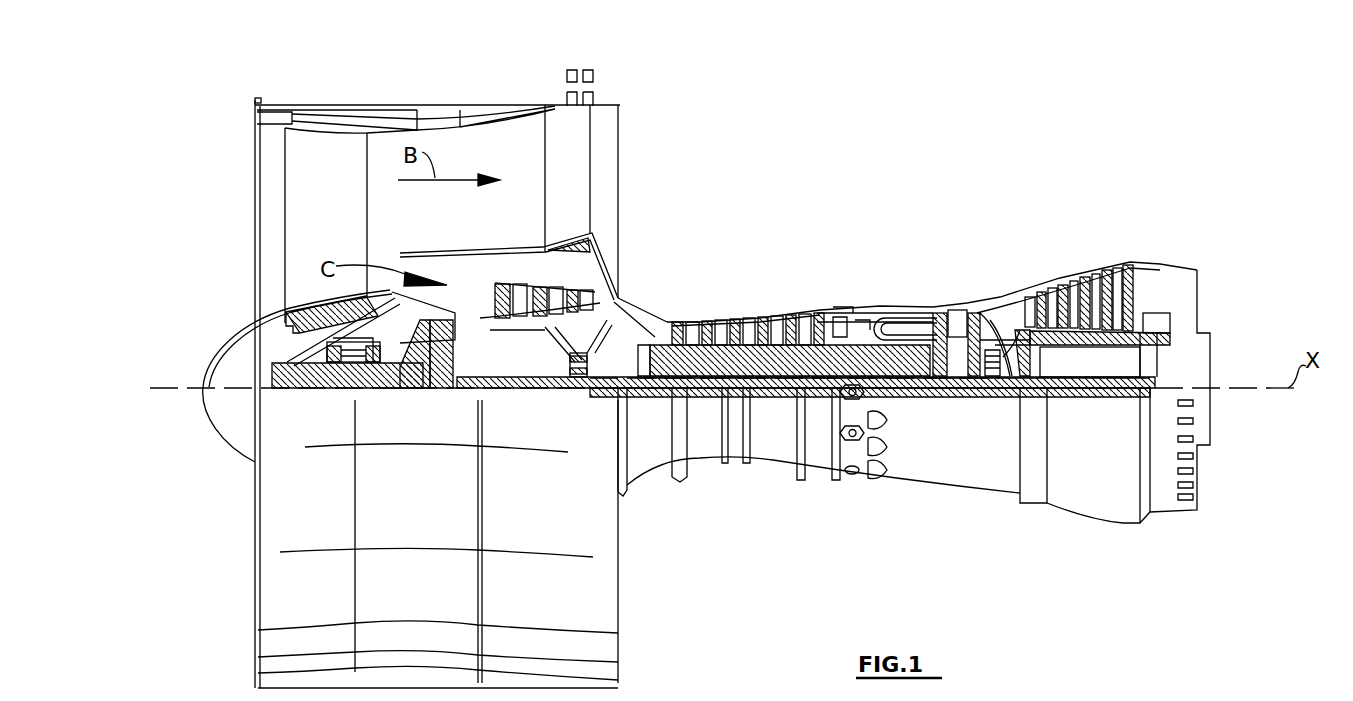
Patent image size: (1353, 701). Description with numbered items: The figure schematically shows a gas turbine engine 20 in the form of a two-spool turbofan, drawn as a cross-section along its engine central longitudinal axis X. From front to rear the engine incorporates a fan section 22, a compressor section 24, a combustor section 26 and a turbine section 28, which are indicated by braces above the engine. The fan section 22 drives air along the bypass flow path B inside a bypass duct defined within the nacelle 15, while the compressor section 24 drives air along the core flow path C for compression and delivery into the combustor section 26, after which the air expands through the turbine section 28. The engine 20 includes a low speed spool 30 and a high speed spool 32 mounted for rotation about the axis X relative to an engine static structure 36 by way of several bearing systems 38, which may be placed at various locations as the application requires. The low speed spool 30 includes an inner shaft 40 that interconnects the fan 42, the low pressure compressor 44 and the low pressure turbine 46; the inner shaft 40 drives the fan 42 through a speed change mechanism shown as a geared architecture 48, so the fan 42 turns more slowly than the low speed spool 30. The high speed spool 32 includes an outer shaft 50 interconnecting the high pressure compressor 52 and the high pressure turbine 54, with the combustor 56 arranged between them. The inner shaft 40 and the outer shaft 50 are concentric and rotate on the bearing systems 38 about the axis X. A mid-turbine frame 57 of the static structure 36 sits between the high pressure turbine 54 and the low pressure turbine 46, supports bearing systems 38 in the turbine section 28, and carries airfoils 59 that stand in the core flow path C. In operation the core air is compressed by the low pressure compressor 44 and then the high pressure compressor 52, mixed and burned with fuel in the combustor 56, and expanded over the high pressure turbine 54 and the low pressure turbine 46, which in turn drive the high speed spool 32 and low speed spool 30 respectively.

The nacelle 15 is at (458, 107).
The gas turbine engine 20 is at (900, 145).
The fan section 22 is at (465, 78).
The compressor section 24 is at (477, 220).
The combustor section 26 is at (930, 220).
The turbine section 28 is at (1150, 220).
The low speed spool 30 is at (776, 405).
The high speed spool 32 is at (822, 332).
The engine static structure 36 is at (818, 486).
The bearing systems 38 is at (335, 388).
The inner shaft 40 is at (638, 398).
The fan 42 is at (341, 233).
The low pressure compressor 44 is at (553, 290).
The low pressure turbine 46 is at (1085, 278).
The geared architecture 48 is at (447, 372).
The outer shaft 50 is at (900, 372).
The high pressure compressor 52 is at (746, 335).
The high pressure turbine 54 is at (957, 312).
The combustor 56 is at (890, 333).
The mid-turbine frame 57 is at (998, 282).
The airfoils 59 is at (1013, 340).